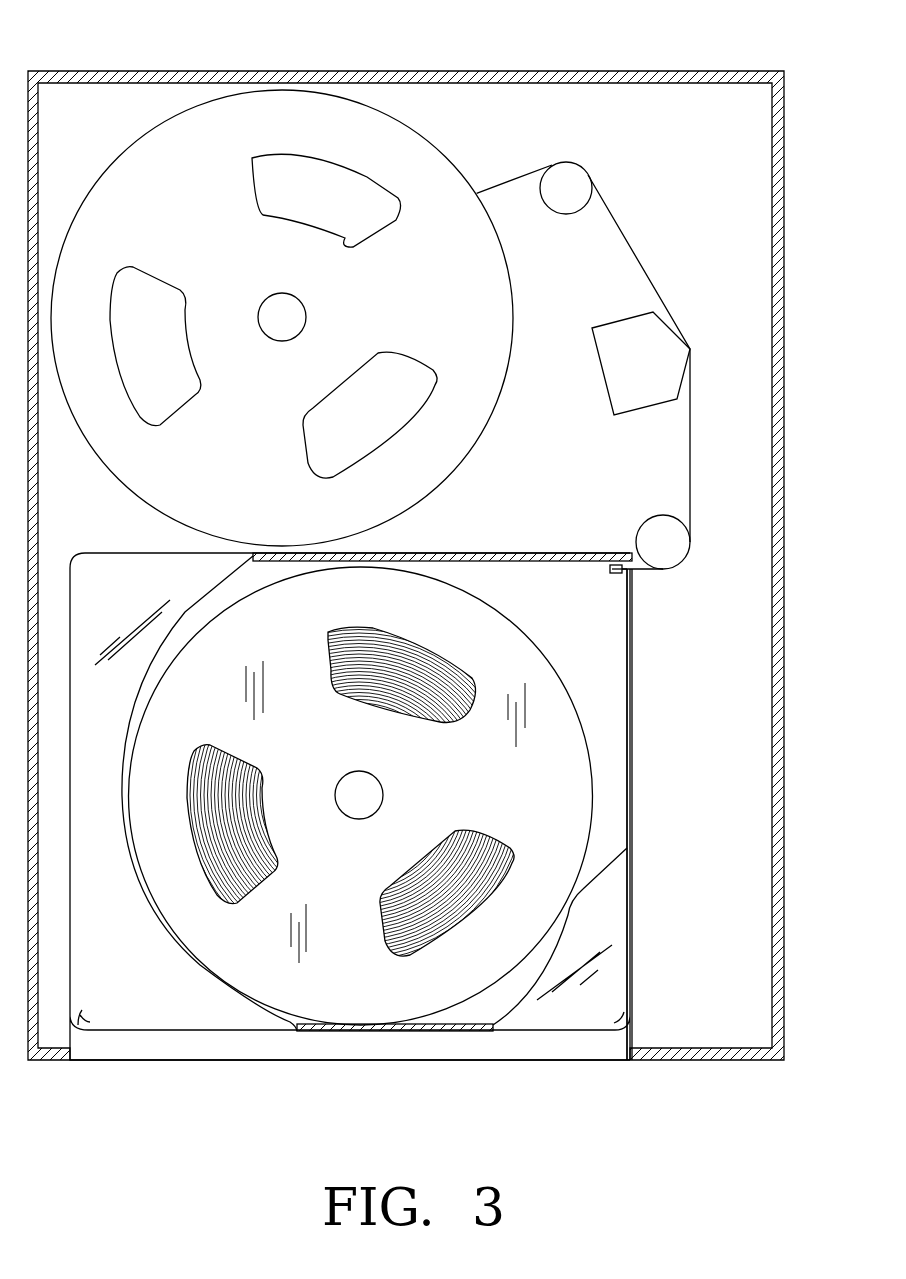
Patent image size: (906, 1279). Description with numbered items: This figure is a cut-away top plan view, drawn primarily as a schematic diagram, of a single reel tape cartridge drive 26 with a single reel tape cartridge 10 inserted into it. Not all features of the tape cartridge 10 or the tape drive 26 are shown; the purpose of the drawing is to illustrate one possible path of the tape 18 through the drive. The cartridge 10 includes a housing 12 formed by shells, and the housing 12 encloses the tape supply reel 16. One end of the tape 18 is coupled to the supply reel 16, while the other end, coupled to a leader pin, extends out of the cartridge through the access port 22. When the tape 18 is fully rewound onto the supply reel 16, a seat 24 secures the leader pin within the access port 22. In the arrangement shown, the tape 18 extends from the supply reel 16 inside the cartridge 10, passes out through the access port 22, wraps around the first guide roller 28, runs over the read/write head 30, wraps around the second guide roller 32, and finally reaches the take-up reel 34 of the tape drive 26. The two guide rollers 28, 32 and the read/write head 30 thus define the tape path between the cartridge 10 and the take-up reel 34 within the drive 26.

The single reel tape cartridge 10 is at (637, 983).
The housing 12 is at (117, 561).
The tape supply reel 16 is at (147, 833).
The tape 18 is at (694, 460).
The access port 22 is at (632, 590).
The seat 24 is at (612, 577).
The tape drive 26 is at (134, 38).
The first guide roller 28 is at (680, 553).
The read/write head 30 is at (611, 383).
The second guide roller 32 is at (566, 201).
The take-up reel 34 is at (427, 478).